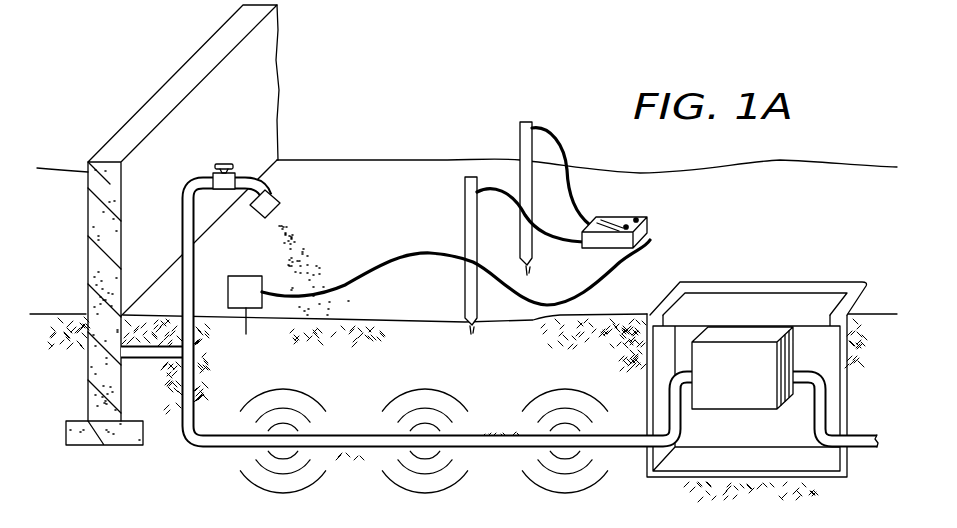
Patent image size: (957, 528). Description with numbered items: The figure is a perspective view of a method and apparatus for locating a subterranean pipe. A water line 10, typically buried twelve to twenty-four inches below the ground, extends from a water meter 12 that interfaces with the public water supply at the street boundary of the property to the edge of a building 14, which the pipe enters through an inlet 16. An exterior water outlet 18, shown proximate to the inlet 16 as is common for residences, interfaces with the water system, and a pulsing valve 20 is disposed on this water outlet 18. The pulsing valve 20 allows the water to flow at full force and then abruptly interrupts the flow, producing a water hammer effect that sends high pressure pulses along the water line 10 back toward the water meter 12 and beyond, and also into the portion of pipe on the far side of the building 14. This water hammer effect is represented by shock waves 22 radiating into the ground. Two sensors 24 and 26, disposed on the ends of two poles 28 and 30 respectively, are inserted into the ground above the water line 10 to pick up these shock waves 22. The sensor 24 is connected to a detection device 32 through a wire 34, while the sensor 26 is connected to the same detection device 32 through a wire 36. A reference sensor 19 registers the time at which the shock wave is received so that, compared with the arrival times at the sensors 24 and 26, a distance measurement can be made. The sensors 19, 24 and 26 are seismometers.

The water line 10 is at (216, 451).
The water meter 12 is at (795, 360).
The building 14 is at (86, 258).
The inlet 16 is at (153, 361).
The water outlet 18 is at (213, 176).
The reference sensor 19 is at (240, 274).
The pulsing valve 20 is at (279, 197).
The shock waves 22 is at (388, 324).
The sensor 24 is at (465, 329).
The sensor 26 is at (537, 271).
The pole 28 is at (465, 212).
The pole 30 is at (522, 121).
The detection device 32 is at (652, 222).
The wire 34 is at (497, 187).
The wire 36 is at (572, 176).